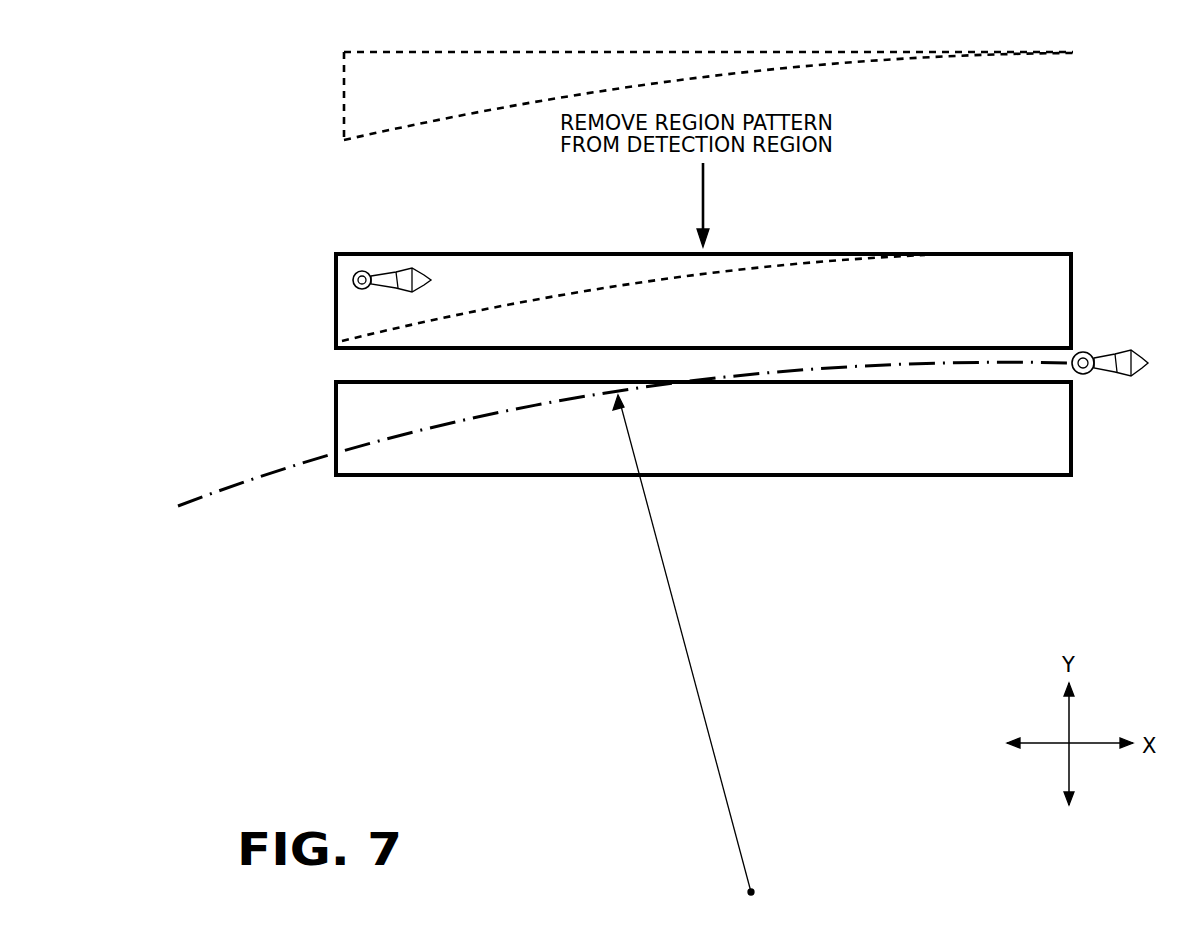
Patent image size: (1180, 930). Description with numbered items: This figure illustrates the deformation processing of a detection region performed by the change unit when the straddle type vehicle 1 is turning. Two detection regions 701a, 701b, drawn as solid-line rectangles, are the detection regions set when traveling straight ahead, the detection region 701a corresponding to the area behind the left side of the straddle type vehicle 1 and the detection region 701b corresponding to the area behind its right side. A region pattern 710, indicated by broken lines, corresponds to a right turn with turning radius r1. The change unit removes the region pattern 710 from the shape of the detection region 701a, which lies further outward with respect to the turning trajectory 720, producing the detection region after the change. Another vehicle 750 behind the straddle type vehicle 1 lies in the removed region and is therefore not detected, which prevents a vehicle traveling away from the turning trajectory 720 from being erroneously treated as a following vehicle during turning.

The region pattern 710 is at (353, 98).
The detection region 701a is at (952, 307).
The detection region 701b is at (960, 440).
The other vehicle 750 is at (362, 269).
The straddle type vehicle 1 is at (1130, 378).
The turning trajectory 720 is at (233, 497).
The turning radius r1 is at (683, 645).